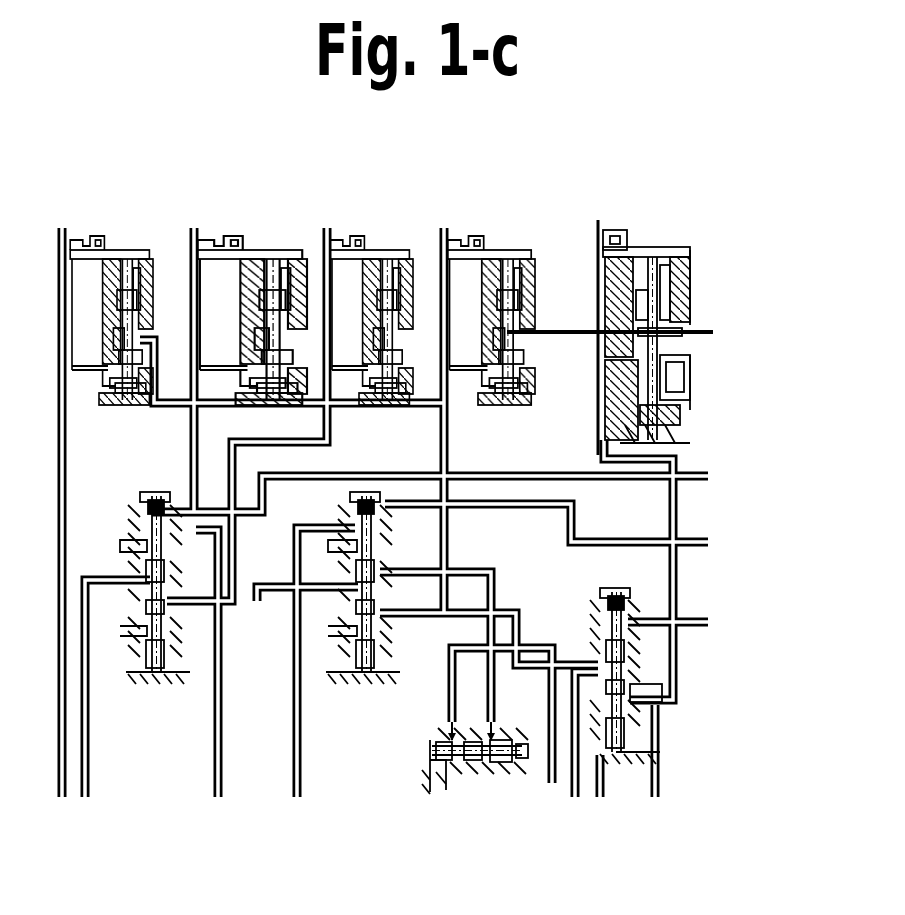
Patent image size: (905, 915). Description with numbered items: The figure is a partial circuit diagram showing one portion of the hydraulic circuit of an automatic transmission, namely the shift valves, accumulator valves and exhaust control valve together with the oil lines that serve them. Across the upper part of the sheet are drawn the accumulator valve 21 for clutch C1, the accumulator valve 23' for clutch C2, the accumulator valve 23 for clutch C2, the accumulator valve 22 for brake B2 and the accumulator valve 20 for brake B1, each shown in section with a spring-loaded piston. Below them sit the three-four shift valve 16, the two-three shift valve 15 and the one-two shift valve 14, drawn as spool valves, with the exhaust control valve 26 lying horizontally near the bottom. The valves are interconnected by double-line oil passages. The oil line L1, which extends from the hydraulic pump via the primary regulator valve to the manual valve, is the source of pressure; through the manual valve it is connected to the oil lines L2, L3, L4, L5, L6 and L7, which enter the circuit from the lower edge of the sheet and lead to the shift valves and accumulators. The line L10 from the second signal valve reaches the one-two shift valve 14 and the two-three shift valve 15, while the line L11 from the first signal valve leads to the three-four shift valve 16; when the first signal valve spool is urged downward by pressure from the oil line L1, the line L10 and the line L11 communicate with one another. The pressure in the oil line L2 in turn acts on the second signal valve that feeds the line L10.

The 1-2 shift valve 14 is at (650, 600).
The 2-3 shift valve 15 is at (362, 492).
The 3-4 shift valve 16 is at (158, 492).
The accumulator valve for brake B1 20 is at (648, 245).
The accumulator valve for clutch C1 21 is at (103, 247).
The accumulator valve for brake B2 22 is at (488, 245).
The accumulator valve for clutch C2 23 is at (377, 283).
The accumulator valve for clutch C2 23' is at (253, 283).
The exhaust control valve 26 is at (424, 724).
The oil line L1 is at (660, 783).
The oil line L2 is at (62, 690).
The oil line L3 is at (293, 700).
The oil line L4 is at (86, 750).
The oil line L5 is at (213, 748).
The oil line L6 is at (600, 792).
The oil line L7 is at (552, 784).
The line L10 is at (706, 542).
The line L11 is at (706, 476).